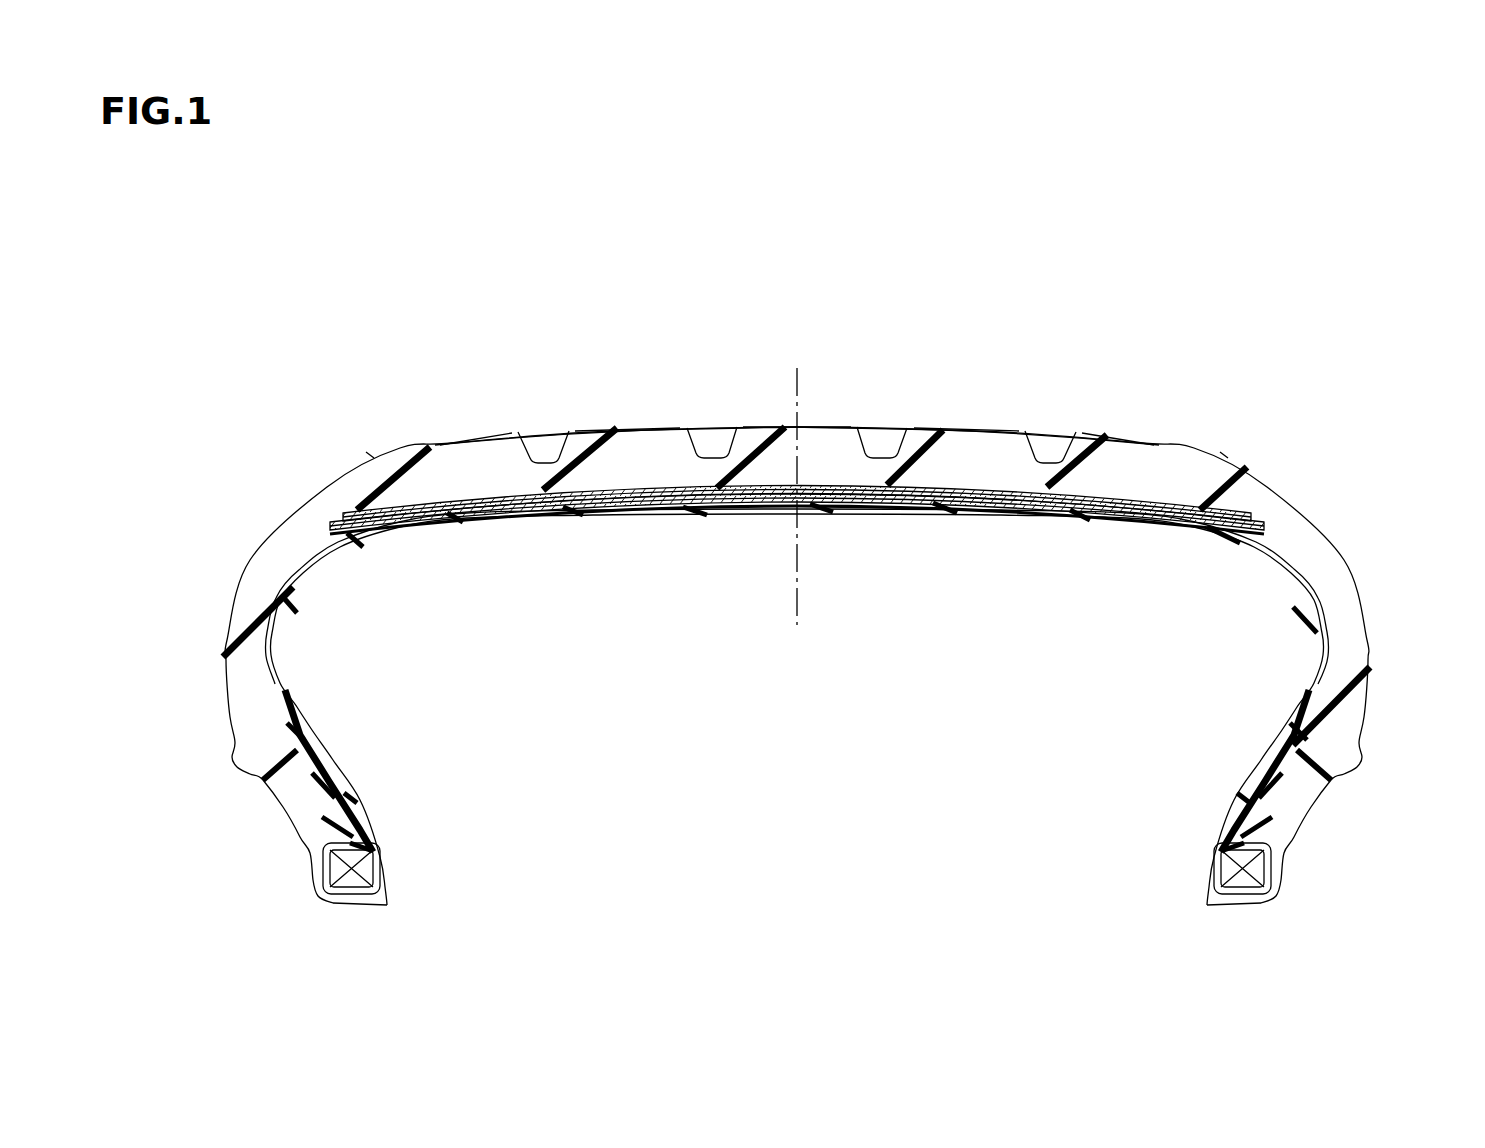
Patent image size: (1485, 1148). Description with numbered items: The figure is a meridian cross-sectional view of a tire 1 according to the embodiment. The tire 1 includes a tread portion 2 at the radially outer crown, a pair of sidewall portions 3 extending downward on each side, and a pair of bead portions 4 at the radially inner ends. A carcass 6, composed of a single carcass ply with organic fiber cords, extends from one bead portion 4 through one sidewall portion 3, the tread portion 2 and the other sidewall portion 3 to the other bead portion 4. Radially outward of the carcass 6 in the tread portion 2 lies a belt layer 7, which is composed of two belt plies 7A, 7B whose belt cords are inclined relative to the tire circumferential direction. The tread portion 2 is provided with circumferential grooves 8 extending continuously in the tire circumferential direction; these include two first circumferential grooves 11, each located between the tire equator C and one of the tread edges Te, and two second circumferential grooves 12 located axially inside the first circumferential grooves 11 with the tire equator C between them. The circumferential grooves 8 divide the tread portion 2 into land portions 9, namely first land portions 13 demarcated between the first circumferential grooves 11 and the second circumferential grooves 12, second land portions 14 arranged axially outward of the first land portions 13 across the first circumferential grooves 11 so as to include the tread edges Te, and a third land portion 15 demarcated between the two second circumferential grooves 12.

The tire 1 is at (382, 360).
The tread portion 2 is at (1172, 440).
The sidewall portion 3 is at (208, 698).
The bead portion 4 is at (281, 847).
The carcass 6 is at (627, 515).
The belt layer 7 is at (797, 581).
The belt ply 7A is at (880, 493).
The belt ply 7B is at (970, 490).
The circumferential grooves 8 is at (797, 352).
The land portions 9 is at (766, 415).
The first circumferential groove 11 is at (549, 435).
The second circumferential groove 12 is at (798, 373).
The first land portion 13 is at (633, 420).
The second land portion 14 is at (466, 428).
The third land portion 15 is at (842, 418).
The tire equator C is at (796, 480).
The tread edge Te is at (370, 455).